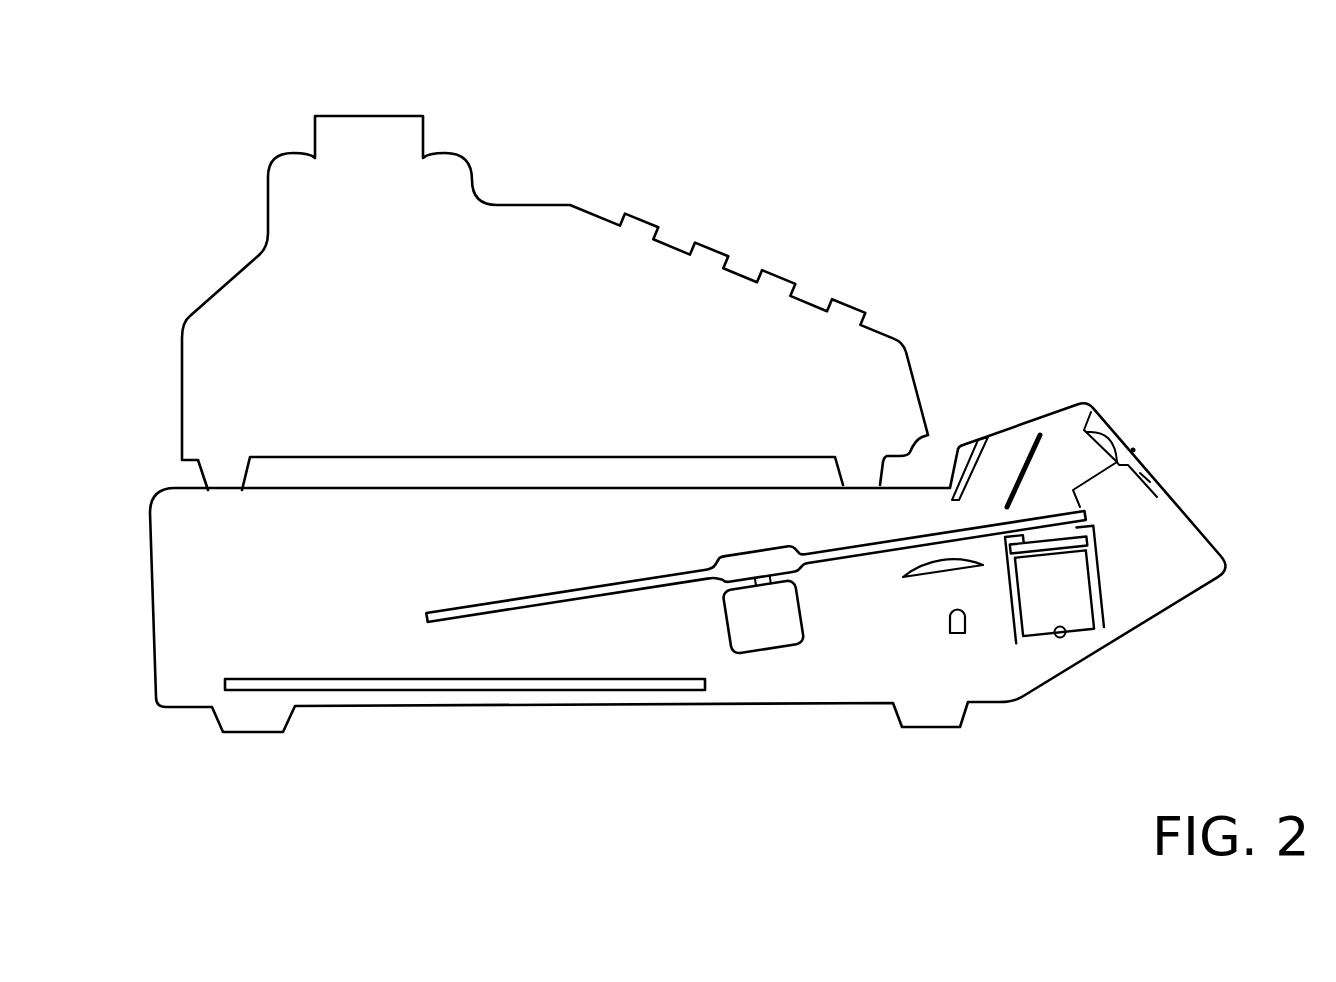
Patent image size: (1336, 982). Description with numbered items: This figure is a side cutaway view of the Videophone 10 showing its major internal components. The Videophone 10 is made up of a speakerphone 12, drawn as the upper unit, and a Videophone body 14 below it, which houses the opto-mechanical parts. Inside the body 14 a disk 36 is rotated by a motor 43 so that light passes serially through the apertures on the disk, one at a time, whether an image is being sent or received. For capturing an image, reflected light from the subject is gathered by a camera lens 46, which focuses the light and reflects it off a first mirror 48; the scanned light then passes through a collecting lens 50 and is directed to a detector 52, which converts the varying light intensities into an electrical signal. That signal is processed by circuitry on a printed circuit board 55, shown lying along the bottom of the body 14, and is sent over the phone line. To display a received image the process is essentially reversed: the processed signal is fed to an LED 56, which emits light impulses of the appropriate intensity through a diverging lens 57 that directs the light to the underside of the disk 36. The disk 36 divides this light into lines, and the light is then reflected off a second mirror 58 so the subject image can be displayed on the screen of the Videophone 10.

The Videophone 10 is at (575, 128).
The speakerphone 12 is at (375, 317).
The Videophone body 14 is at (222, 623).
The disk 36 is at (470, 617).
The motor 43 is at (770, 618).
The camera lens 46 is at (1103, 447).
The first mirror 48 is at (1023, 467).
The collecting lens 50 is at (1087, 548).
The detector 52 is at (1063, 640).
The printed circuit board 55 is at (408, 687).
The LED 56 is at (958, 630).
The diverging lens 57 is at (942, 567).
The second mirror 58 is at (967, 460).